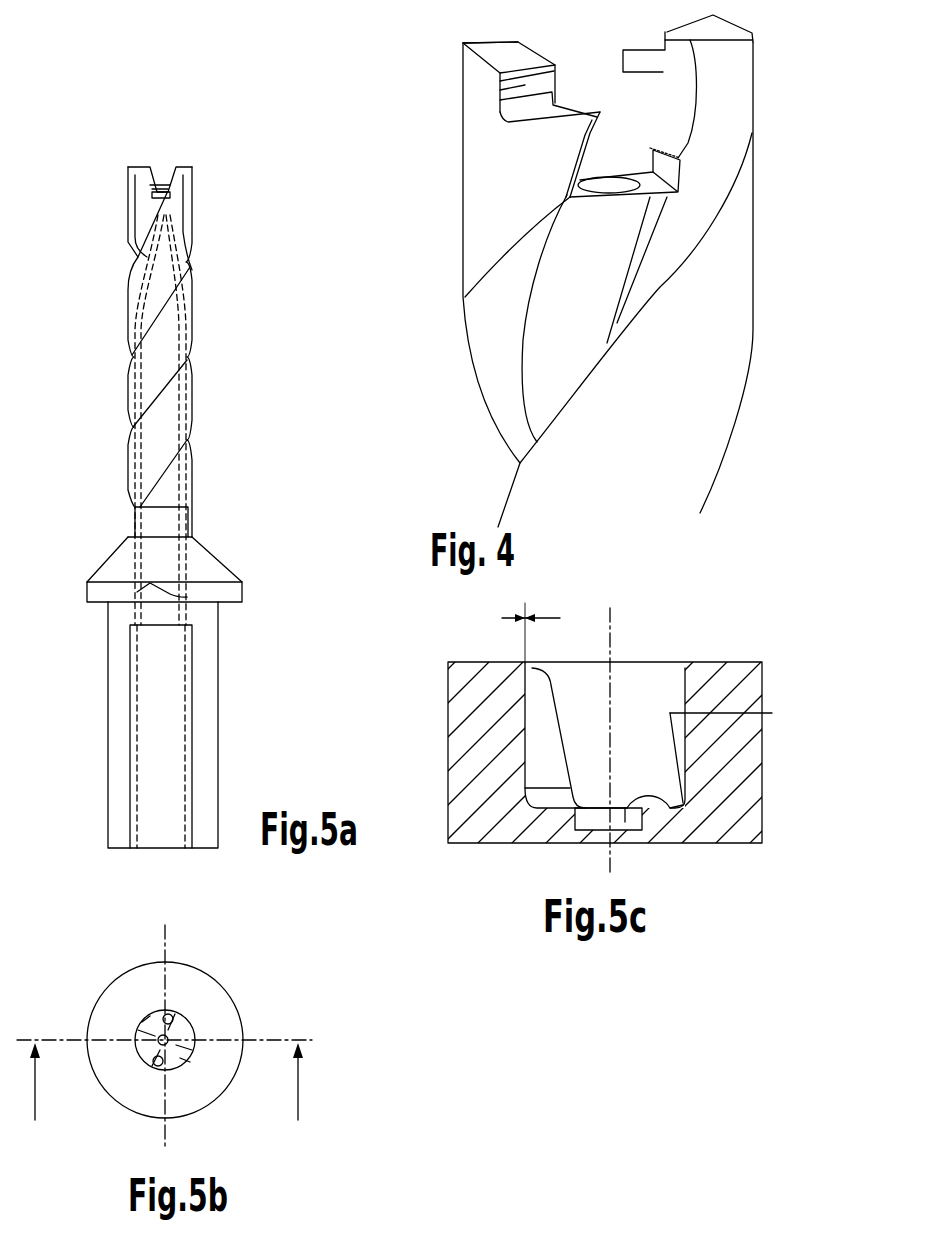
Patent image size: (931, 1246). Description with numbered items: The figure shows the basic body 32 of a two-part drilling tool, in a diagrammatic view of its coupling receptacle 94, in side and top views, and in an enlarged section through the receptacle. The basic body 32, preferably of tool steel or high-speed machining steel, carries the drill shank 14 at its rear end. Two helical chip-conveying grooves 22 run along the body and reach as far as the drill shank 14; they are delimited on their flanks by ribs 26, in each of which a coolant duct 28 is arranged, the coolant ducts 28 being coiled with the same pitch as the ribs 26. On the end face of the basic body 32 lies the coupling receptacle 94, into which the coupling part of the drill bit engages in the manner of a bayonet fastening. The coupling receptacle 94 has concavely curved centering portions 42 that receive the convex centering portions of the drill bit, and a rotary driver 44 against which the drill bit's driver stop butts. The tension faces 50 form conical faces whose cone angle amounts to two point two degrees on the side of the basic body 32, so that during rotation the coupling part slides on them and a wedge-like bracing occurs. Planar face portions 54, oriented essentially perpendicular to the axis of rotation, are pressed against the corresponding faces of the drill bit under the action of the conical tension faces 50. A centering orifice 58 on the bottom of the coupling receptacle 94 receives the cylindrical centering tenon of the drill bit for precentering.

In FIG. 5A, the drill shank 14 is at (205, 680).
In FIG. 4, the chip-conveying grooves 22 is at (541, 350).
In FIG. 5A, the chip-conveying grooves 22 is at (140, 394).
In FIG. 5A, the ribs 26 is at (137, 280).
In FIG. 5A, the coolant duct 28 is at (197, 293).
In FIG. 4, the basic body 32 is at (770, 187).
In FIG. 5A, the basic body 32 is at (203, 368).
In FIG. 5B, the basic body 32 is at (213, 997).
In FIG. 5C, the basic body 32 is at (476, 798).
In FIG. 4, the concavely curved centering portions 42 is at (585, 160).
In FIG. 5C, the concavely curved centering portions 42 is at (582, 569).
In FIG. 4, the rotary driver 44 is at (518, 88).
In FIG. 4, the tension faces 50 is at (647, 170).
In FIG. 5C, the tension faces 50 is at (555, 738).
In FIG. 4, the planar face portions 54 is at (490, 48).
In FIG. 4, the centering orifice 58 is at (607, 188).
In FIG. 5C, the centering orifice 58 is at (677, 810).
In FIG. 4, the coupling receptacle 94 is at (616, 51).
In FIG. 5A, the coupling receptacle 94 is at (158, 178).
In FIG. 5B, the coupling receptacle 94 is at (153, 1027).
In FIG. 5C, the coupling receptacle 94 is at (642, 712).